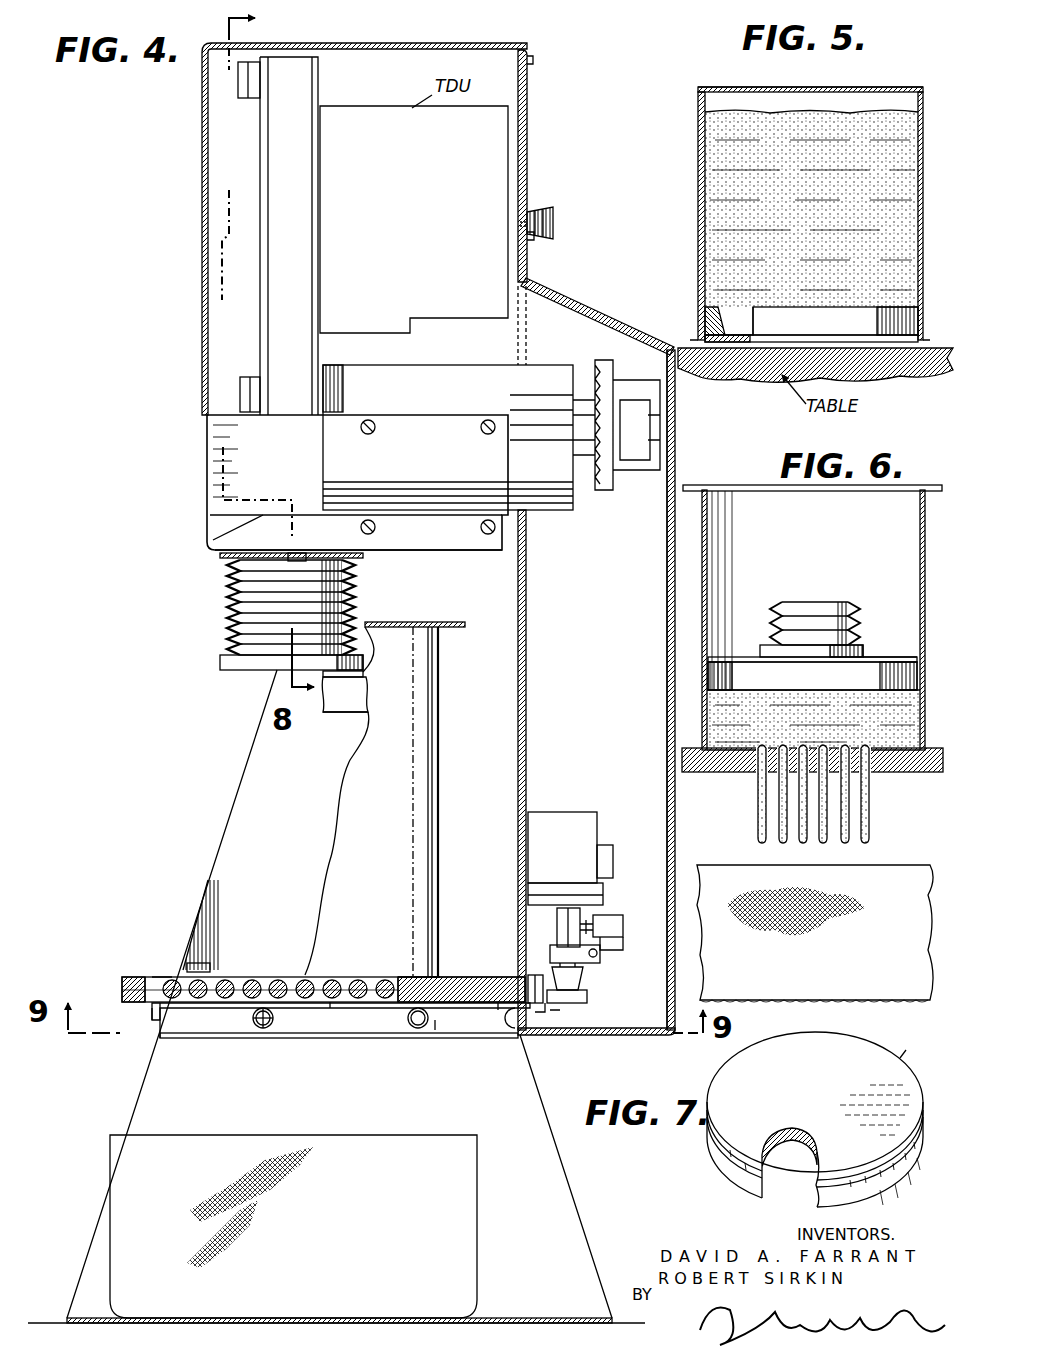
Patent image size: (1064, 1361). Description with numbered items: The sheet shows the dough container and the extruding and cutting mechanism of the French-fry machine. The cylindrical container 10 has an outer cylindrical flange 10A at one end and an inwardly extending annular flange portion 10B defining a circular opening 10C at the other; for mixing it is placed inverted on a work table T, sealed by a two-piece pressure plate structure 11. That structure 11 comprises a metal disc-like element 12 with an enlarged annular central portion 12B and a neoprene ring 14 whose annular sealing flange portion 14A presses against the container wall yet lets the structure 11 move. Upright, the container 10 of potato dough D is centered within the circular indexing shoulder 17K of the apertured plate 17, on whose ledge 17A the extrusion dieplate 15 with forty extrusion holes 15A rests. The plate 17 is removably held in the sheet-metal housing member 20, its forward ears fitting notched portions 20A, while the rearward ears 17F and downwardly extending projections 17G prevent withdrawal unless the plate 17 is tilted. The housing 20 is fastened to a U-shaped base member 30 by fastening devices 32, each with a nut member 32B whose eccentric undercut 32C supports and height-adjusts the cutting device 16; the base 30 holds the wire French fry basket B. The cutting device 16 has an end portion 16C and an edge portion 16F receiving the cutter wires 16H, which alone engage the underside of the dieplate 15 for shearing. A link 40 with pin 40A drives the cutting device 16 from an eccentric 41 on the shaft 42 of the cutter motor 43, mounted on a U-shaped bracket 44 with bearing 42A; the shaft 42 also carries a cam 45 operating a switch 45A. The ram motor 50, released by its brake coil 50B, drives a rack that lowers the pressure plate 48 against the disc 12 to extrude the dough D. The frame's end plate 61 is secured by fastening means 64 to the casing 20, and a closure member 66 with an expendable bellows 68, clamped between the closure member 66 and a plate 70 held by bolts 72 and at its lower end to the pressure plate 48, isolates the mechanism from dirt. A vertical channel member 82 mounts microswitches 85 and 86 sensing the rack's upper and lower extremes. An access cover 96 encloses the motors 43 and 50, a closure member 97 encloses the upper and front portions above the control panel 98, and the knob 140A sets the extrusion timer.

In FIG. 4, the container 10 is at (396, 732).
In FIG. 5, the container 10 is at (698, 236).
In FIG. 6, the container 10 is at (920, 555).
In FIG. 4, the outer cylindrical flange 10A is at (456, 624).
In FIG. 5, the outer cylindrical flange 10A is at (692, 344).
In FIG. 6, the outer cylindrical flange 10A is at (690, 486).
In FIG. 5, the annular flange portion 10B is at (698, 89).
In FIG. 6, the annular flange portion 10B is at (908, 768).
In FIG. 5, the circular opening 10C is at (860, 87).
In FIG. 6, the circular opening 10C is at (730, 750).
In FIG. 4, the pressure plate structure 11 is at (318, 710).
In FIG. 5, the pressure plate structure 11 is at (740, 326).
In FIG. 6, the pressure plate structure 11 is at (912, 650).
In FIG. 7, the pressure plate structure 11 is at (902, 1064).
In FIG. 4, the metal disc-like element 12 is at (360, 672).
In FIG. 5, the metal disc-like element 12 is at (727, 345).
In FIG. 6, the metal disc-like element 12 is at (745, 658).
In FIG. 7, the metal disc-like element 12 is at (815, 1119).
In FIG. 7, the enlarged annular central portion 12B is at (820, 1207).
In FIG. 5, the neoprene ring 14 is at (710, 302).
In FIG. 7, the neoprene ring 14 is at (782, 1180).
In FIG. 4, the annular sealing flange portion 14A is at (342, 720).
In FIG. 5, the annular sealing flange portion 14A is at (843, 318).
In FIG. 6, the annular sealing flange portion 14A is at (718, 672).
In FIG. 7, the annular sealing flange portion 14A is at (738, 1168).
In FIG. 4, the extrusion dieplate 15 is at (410, 982).
In FIG. 4, the extrusion holes 15A is at (274, 984).
In FIG. 6, the extrusion holes 15A is at (800, 762).
In FIG. 4, the cutting device 16 is at (150, 1012).
In FIG. 4, the downwardly extending end portion 16C is at (160, 1013).
In FIG. 4, the edge portion 16F is at (330, 996).
In FIG. 4, the cutter wires 16H is at (170, 1004).
In FIG. 4, the apertured plate 17 is at (128, 984).
In FIG. 4, the plate ledge 17A is at (160, 1030).
In FIG. 4, the rearwardly disposed ears 17F is at (528, 986).
In FIG. 4, the downwardly extending projections 17G is at (548, 1010).
In FIG. 4, the circular indexing shoulder 17K is at (160, 978).
In FIG. 6, the circular indexing shoulder 17K is at (690, 772).
In FIG. 4, the housing member 20 is at (528, 126).
In FIG. 4, the notched portions 20A is at (196, 968).
In FIG. 4, the base member 30 is at (545, 1172).
In FIG. 4, the fastening devices 32 is at (256, 1022).
In FIG. 4, the nut member 32B is at (268, 1024).
In FIG. 4, the eccentric undercut 32C is at (268, 1026).
In FIG. 4, the link 40 is at (498, 1006).
In FIG. 4, the pin 40A is at (428, 1028).
In FIG. 4, the eccentric 41 is at (588, 998).
In FIG. 4, the motor shaft 42 is at (572, 905).
In FIG. 4, the bearing 42A is at (585, 980).
In FIG. 4, the motor 43 is at (558, 820).
In FIG. 4, the bracket 44 is at (601, 900).
In FIG. 4, the cam 45 is at (560, 922).
In FIG. 4, the switch 45A is at (623, 928).
In FIG. 4, the pressure plate 48 is at (242, 670).
In FIG. 6, the pressure plate 48 is at (860, 648).
In FIG. 4, the motor 50 is at (426, 378).
In FIG. 4, the brake coil 50B is at (620, 490).
In FIG. 4, the end plate 61 is at (357, 482).
In FIG. 4, the fastening means 64 is at (481, 428).
In FIG. 4, the closure member 66 is at (423, 552).
In FIG. 4, the bellows 68 is at (236, 600).
In FIG. 4, the plate 70 is at (220, 557).
In FIG. 4, the bolts 72 is at (300, 553).
In FIG. 4, the channel member 82 is at (278, 330).
In FIG. 4, the microswitch 85 is at (238, 82).
In FIG. 4, the microswitch 86 is at (240, 392).
In FIG. 4, the access cover 96 is at (667, 620).
In FIG. 4, the closure member 97 is at (202, 252).
In FIG. 4, the control panel 98 is at (207, 470).
In FIG. 4, the knob 140A is at (553, 214).
In FIG. 4, the French fry basket B is at (312, 1148).
In FIG. 6, the French fry basket B is at (886, 872).
In FIG. 5, the potato dough D is at (811, 208).
In FIG. 6, the potato dough D is at (900, 722).
In FIG. 5, the work table T is at (915, 366).